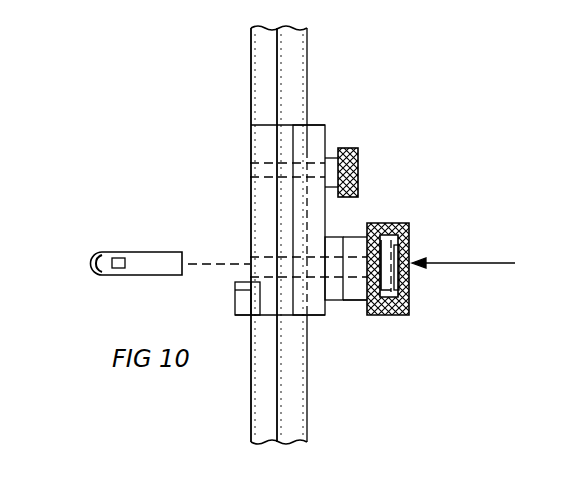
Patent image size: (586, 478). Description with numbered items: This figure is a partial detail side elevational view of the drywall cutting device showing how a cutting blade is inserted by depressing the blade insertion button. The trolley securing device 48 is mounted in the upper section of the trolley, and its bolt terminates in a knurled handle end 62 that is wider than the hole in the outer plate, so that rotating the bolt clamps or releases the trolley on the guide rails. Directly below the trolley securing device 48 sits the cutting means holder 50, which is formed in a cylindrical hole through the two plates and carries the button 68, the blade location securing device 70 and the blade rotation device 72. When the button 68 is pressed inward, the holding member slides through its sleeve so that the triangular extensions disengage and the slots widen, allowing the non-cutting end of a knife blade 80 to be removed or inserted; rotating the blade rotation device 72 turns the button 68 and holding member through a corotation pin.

The trolley securing device 48 is at (342, 128).
The cutting means holder 50 is at (338, 322).
The handle end 62 is at (357, 148).
The button 68 is at (410, 256).
The blade location securing device 70 is at (333, 234).
The blade rotation device 72 is at (355, 302).
The knife blade 80 is at (152, 262).